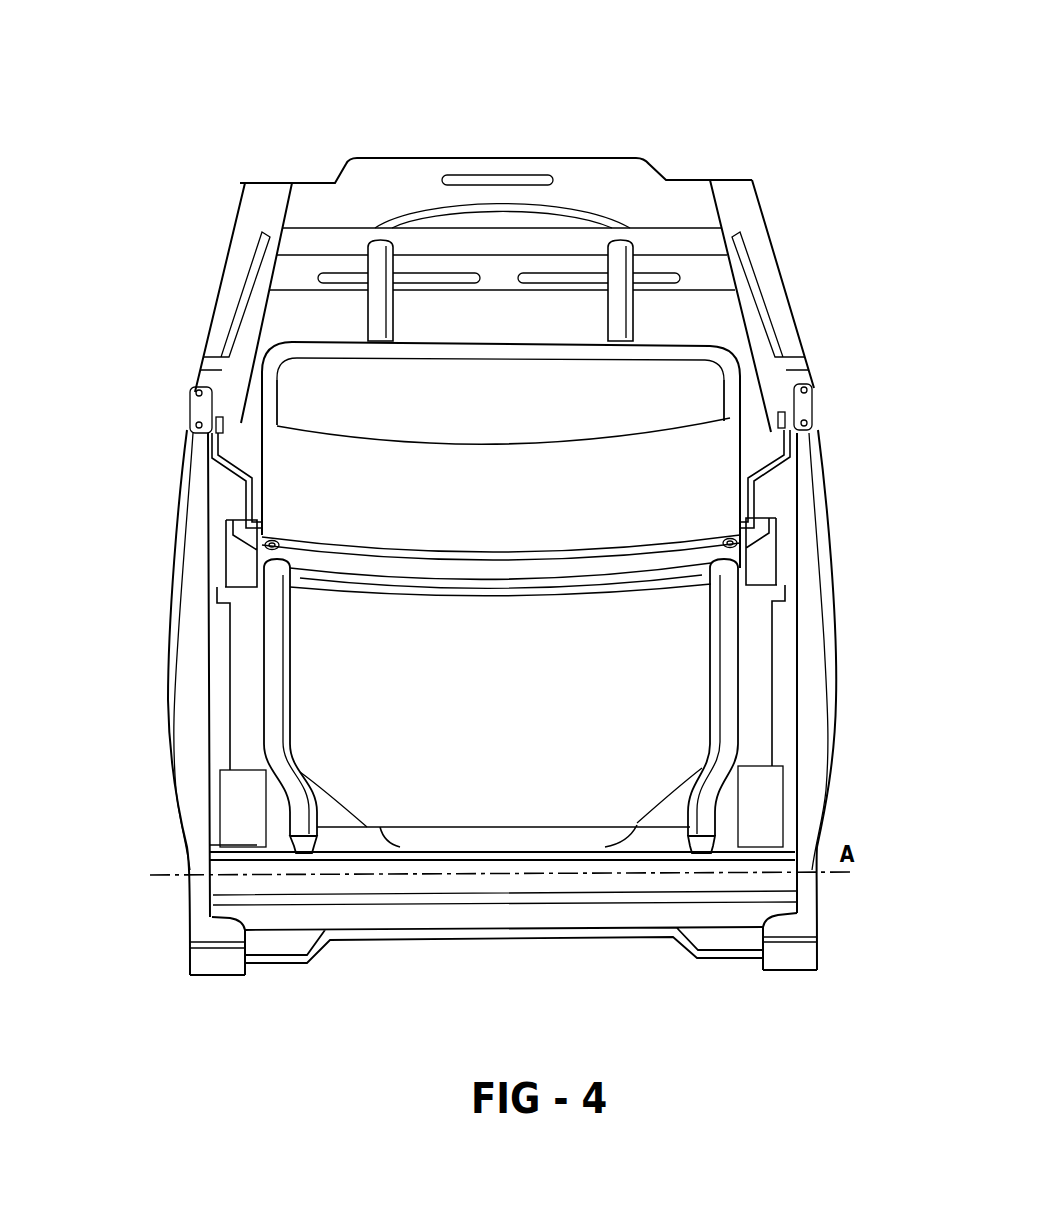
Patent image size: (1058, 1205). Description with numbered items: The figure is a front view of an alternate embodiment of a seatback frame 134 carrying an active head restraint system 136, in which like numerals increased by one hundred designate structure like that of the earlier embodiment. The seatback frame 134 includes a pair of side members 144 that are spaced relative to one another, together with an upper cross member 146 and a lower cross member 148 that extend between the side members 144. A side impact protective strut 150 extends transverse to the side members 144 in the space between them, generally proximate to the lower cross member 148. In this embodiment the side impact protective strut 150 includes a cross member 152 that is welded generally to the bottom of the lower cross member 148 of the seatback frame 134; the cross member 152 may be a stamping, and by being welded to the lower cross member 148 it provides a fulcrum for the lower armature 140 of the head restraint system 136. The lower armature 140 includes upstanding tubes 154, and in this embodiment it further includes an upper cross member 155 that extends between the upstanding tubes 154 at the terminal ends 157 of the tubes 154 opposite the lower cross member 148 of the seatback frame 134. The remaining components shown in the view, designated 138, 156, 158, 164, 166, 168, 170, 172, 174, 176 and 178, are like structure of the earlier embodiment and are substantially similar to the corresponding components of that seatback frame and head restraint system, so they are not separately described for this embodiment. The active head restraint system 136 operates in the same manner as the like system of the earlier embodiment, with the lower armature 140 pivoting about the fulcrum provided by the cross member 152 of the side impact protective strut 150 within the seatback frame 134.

The seatback frame 134 is at (752, 138).
The active head restraint system 136 is at (762, 349).
The left side member 138 is at (240, 341).
The lower armature 140 is at (765, 618).
The side members 144 is at (232, 268).
The upper cross member 146 is at (556, 168).
The lower cross member 148 is at (770, 777).
The side impact protective strut 150 is at (462, 915).
The cross member 152 is at (483, 855).
The upstanding tubes 154 is at (292, 708).
The upper cross member 155 is at (558, 586).
The lower frame portion 156 is at (468, 627).
The terminal ends 157 is at (756, 570).
The mounting plate 158 is at (786, 832).
The upper frame 164 is at (503, 341).
The frame side portion 166 is at (283, 388).
The back panel 168 is at (495, 445).
The head restraint post 170 is at (372, 247).
The lower bracket 172 is at (243, 562).
The upper bracket 174 is at (243, 519).
The hinge plate 176 is at (200, 414).
The cross member 178 is at (262, 523).